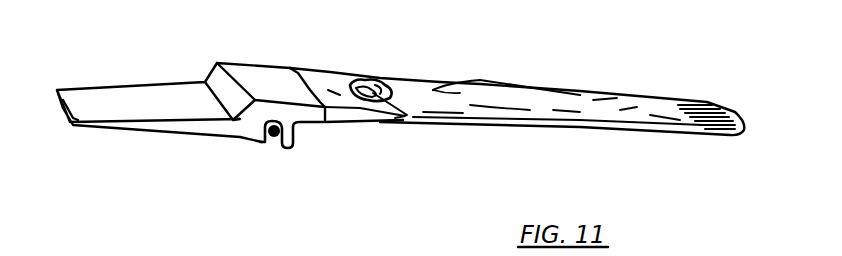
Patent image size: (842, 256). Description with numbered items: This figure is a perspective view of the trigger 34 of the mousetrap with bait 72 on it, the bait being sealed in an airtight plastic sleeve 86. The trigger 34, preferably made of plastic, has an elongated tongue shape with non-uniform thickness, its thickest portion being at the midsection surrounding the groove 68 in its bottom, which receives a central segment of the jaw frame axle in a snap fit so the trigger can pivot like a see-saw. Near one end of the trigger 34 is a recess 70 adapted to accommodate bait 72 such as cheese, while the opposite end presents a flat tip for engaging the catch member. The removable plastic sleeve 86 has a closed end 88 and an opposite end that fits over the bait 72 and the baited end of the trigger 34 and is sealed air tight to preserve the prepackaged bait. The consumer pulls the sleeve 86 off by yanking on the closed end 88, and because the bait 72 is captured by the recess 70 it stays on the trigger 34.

The trigger 34 is at (137, 83).
The groove 68 is at (273, 143).
The recess 70 is at (377, 103).
The bait 72 is at (373, 80).
The plastic sleeve 86 is at (520, 85).
The closed end 88 is at (707, 100).